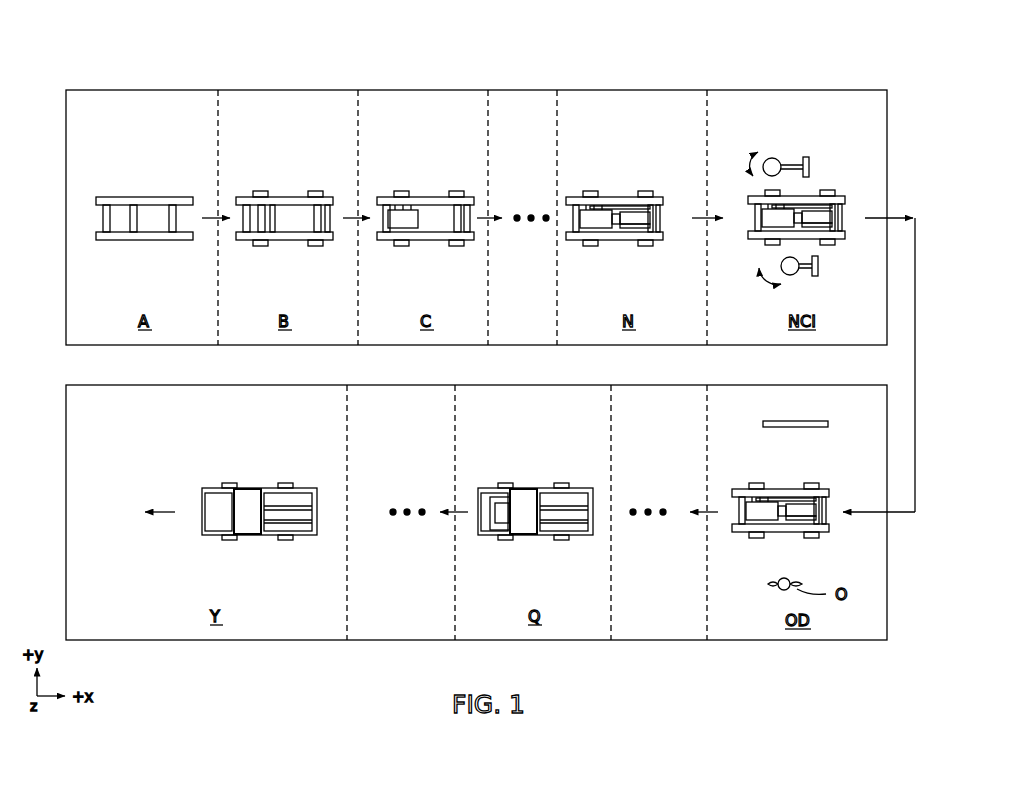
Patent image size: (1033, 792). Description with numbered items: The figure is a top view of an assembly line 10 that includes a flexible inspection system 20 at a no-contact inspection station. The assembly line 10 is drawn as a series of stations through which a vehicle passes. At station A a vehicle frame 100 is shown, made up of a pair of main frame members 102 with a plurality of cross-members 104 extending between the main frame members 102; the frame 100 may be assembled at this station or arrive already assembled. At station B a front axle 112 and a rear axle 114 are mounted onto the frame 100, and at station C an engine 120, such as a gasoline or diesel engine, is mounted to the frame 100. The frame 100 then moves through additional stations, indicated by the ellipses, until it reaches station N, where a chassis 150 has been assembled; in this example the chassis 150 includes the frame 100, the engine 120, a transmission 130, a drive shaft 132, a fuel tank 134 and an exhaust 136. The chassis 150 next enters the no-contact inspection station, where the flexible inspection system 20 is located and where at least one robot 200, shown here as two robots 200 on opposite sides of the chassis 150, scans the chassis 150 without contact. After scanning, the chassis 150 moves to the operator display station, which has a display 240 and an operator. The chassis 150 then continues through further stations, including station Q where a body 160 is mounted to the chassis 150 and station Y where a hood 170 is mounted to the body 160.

The assembly line 10 is at (888, 72).
The flexible inspection (FI) system 20 is at (840, 135).
The vehicle frame 100 is at (375, 229).
The main frame members 102 is at (116, 197).
The cross-members 104 is at (135, 215).
The front axle 112 is at (260, 220).
The rear axle 114 is at (315, 220).
The engine 120 is at (407, 220).
The transmission 130 is at (614, 225).
The drive shaft 132 is at (636, 224).
The fuel tank 134 is at (643, 228).
The exhaust 136 is at (627, 206).
The chassis 150 is at (525, 344).
The body 160 is at (268, 532).
The hood 170 is at (212, 518).
The robot 200 is at (780, 151).
The display 240 is at (798, 421).